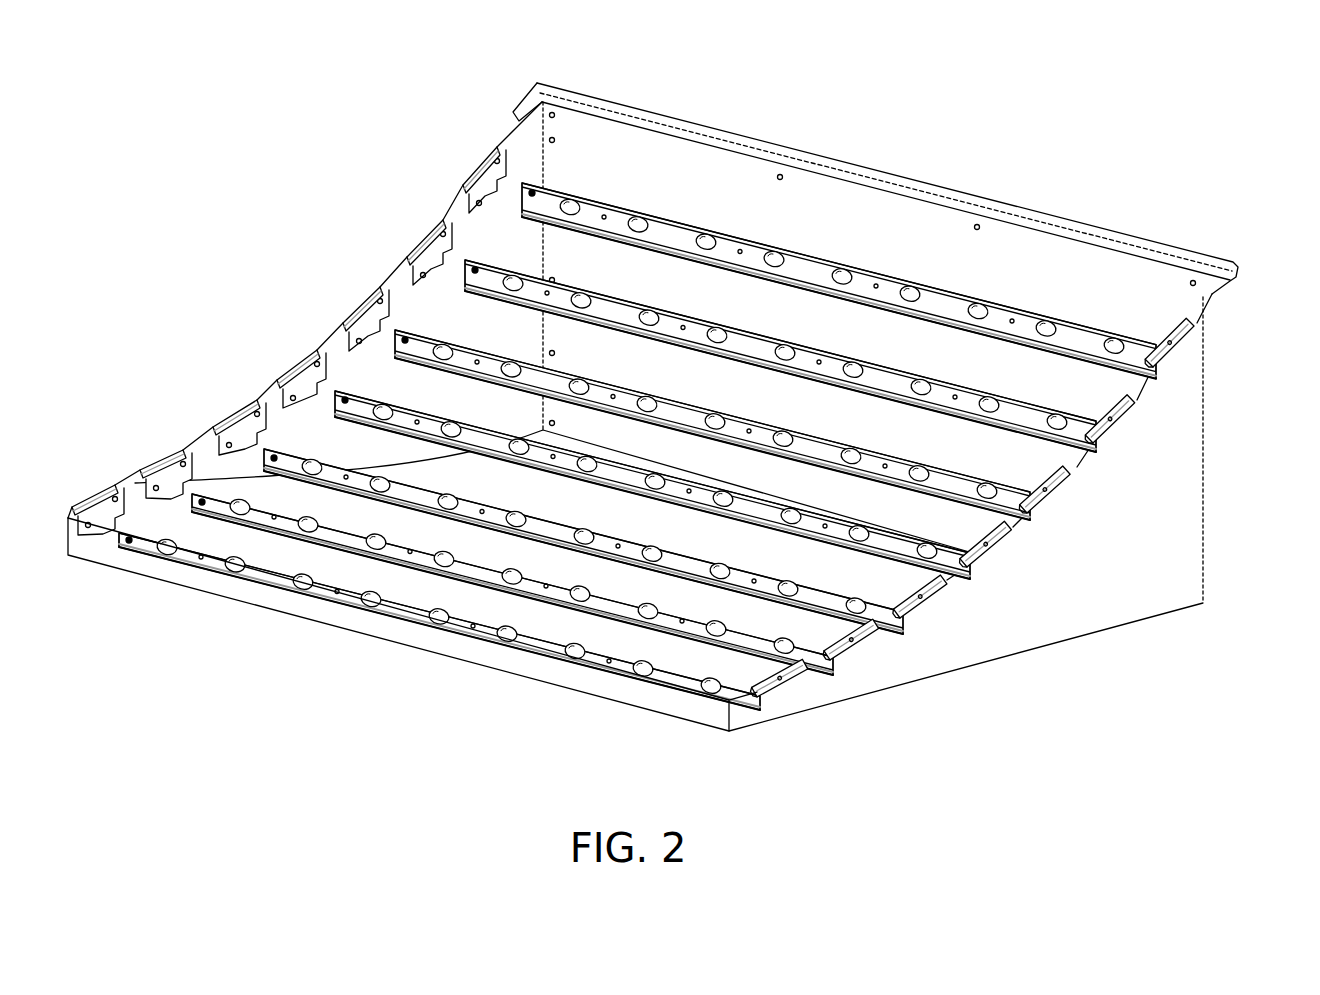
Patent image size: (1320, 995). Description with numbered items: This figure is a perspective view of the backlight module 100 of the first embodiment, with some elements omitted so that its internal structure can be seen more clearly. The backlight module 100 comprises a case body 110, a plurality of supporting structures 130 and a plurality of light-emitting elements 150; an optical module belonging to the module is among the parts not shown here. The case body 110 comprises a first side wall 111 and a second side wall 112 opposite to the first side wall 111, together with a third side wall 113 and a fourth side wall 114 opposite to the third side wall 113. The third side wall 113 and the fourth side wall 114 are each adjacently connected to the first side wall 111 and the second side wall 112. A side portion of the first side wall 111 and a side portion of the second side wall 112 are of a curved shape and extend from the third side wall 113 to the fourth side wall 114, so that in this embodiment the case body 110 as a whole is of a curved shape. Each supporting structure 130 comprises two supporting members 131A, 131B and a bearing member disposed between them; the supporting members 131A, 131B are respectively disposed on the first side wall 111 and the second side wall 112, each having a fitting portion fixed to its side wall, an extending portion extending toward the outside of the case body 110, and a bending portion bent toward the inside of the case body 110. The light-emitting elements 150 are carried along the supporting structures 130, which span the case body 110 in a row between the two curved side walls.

The backlight module 100 is at (363, 75).
The case body 110 is at (1145, 622).
The first side wall 111 is at (345, 372).
The second side wall 112 is at (1190, 457).
The third side wall 113 is at (872, 216).
The fourth side wall 114 is at (262, 594).
The supporting structure 130 is at (757, 247).
The supporting member 131A is at (485, 150).
The supporting member 131B is at (1190, 342).
The light-emitting element 150 is at (678, 237).